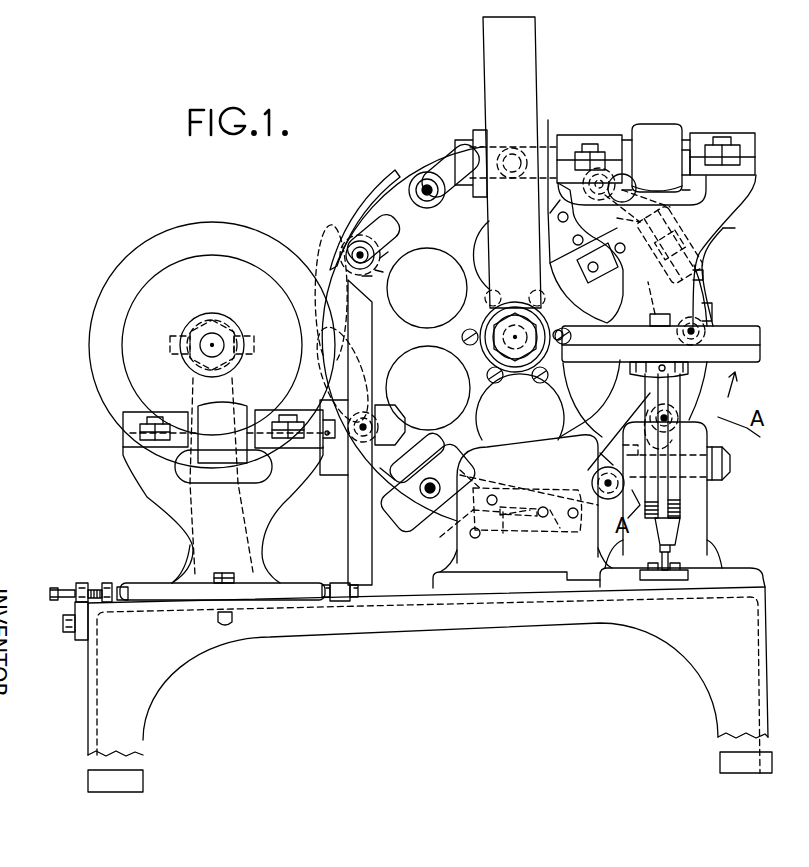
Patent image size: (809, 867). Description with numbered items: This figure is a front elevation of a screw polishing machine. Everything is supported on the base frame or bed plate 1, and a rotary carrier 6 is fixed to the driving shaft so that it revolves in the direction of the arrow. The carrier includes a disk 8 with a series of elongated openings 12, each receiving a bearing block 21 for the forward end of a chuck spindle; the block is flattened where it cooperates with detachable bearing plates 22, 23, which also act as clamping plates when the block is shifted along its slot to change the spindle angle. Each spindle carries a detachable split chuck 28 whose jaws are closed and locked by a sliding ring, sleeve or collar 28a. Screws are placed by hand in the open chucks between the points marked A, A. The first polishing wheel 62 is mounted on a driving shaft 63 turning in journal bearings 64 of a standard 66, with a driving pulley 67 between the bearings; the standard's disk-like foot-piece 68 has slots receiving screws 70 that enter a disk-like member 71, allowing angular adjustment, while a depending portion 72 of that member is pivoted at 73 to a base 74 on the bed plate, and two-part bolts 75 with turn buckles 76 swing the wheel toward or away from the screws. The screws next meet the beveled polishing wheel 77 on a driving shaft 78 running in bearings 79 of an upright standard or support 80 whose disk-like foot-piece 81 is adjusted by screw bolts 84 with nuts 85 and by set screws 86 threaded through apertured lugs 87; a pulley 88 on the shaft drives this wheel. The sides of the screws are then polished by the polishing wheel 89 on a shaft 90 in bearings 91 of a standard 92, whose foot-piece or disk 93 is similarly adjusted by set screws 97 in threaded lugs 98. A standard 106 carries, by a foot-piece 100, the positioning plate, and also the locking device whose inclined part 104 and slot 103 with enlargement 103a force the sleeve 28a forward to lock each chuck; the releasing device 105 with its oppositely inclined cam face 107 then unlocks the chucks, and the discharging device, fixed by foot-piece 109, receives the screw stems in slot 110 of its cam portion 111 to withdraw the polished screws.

The base frame or bed plate 1 is at (430, 689).
The rotary carrier 6 is at (514, 334).
The disk 8 is at (507, 291).
The opening 12 is at (440, 175).
The bearing block 21 is at (370, 283).
The bearing plate 22 is at (385, 254).
The bearing plate 23 is at (368, 212).
The chuck 28 is at (352, 243).
The sliding ring, sleeve or collar 28a is at (375, 265).
The polishing wheel 62 is at (507, 162).
The driving shaft 63 is at (684, 135).
The journal bearings 64 is at (565, 146).
The standard 66 is at (657, 247).
The driving pulley 67 is at (643, 124).
The disk-like foot-piece 68 is at (733, 332).
The screws 70 is at (660, 318).
The disk-like member 71 is at (751, 376).
The depending portion 72 is at (648, 390).
The pivot 73 is at (730, 462).
The base 74 is at (735, 568).
The two-part bolt 75 is at (667, 560).
The turn buckle 76 is at (672, 490).
The beveled polishing wheel 77 is at (372, 533).
The driving shaft 78 is at (258, 442).
The bearings 79 is at (136, 412).
The upright standard or support 80 is at (223, 480).
The disk-like foot-piece 81 is at (292, 583).
The screw bolts 84 is at (224, 573).
The nuts 85 is at (216, 622).
The set screws 86 is at (100, 588).
The apertured lugs 87 is at (112, 586).
The pulley 88 is at (223, 442).
The polishing wheel 89 is at (176, 232).
The shaft 90 is at (215, 336).
The bearings 91 is at (198, 322).
The standard 92 is at (186, 548).
The foot-piece or disk 93 is at (122, 602).
The set screws 97 is at (64, 598).
The threaded lugs 98 is at (80, 583).
The foot-piece 100 is at (604, 262).
The slot 103 is at (705, 260).
The enlargement 103a is at (613, 211).
The inclined part 104 is at (730, 229).
The releasing device 105 is at (476, 486).
The standard 106 is at (528, 511).
The cam or inclined face 107 is at (433, 468).
The foot-piece 109 is at (552, 530).
The slot 110 is at (500, 528).
The cam portion 111 is at (458, 532).